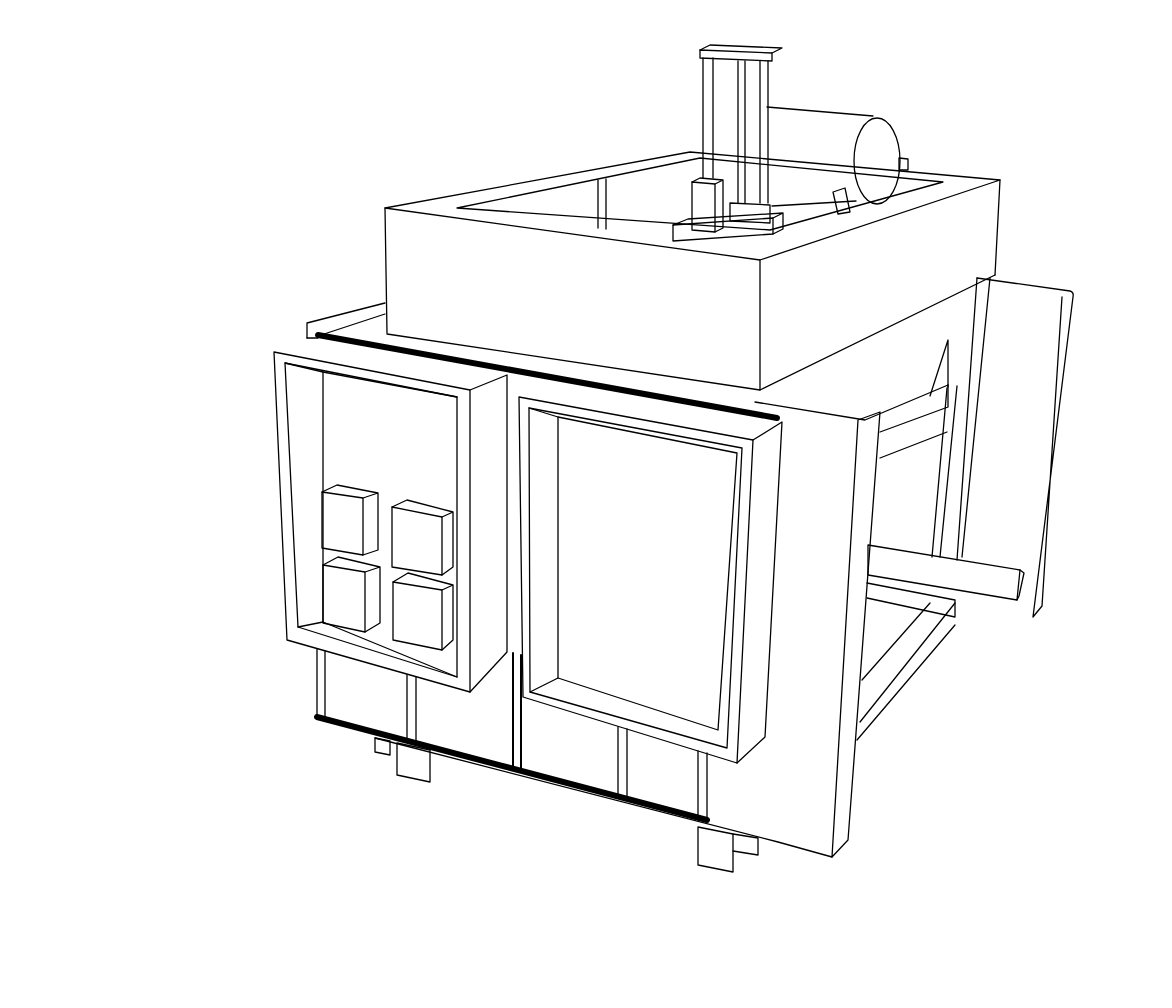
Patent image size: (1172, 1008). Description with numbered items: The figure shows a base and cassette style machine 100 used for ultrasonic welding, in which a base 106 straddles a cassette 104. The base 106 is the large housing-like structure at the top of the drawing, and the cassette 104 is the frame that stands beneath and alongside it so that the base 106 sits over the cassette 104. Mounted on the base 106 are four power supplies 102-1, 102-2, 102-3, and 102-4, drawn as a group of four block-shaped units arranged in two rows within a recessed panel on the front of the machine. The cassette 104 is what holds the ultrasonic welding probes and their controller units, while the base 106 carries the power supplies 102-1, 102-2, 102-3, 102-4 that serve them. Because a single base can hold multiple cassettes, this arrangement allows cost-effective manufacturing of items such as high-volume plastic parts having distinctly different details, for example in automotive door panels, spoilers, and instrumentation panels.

The base and cassette style machine 100 is at (155, 68).
The power supply 102-1 is at (325, 520).
The power supply 102-2 is at (327, 598).
The power supply 102-3 is at (417, 523).
The power supply 102-4 is at (417, 640).
The cassette 104 is at (920, 420).
The base 106 is at (385, 233).